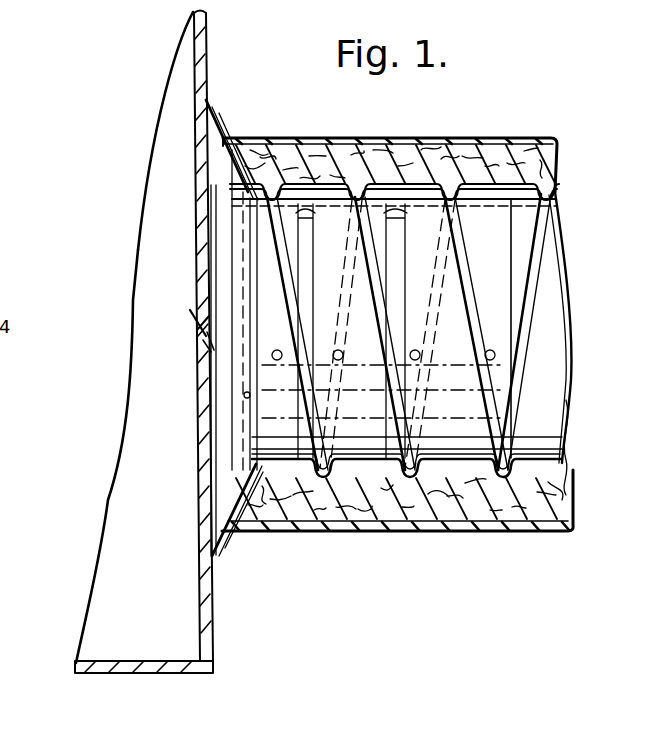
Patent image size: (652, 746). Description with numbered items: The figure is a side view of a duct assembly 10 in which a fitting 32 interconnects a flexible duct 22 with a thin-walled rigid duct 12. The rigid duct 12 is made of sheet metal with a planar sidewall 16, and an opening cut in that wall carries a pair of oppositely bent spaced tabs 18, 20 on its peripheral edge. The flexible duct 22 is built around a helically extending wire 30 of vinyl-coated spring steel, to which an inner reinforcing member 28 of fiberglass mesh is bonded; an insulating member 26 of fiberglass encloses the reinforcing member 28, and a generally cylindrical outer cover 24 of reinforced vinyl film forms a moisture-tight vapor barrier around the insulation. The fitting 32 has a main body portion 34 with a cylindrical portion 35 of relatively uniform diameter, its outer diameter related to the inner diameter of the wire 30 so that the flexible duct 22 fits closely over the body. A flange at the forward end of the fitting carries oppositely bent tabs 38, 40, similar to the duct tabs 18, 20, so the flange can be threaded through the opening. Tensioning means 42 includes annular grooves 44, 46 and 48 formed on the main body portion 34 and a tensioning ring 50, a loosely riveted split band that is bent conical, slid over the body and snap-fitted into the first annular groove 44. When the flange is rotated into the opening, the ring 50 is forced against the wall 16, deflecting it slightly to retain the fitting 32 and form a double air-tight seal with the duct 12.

The duct assembly 10 is at (143, 73).
The rigid duct 12 is at (92, 630).
The sidewall 16 is at (207, 61).
The tab 18 is at (192, 314).
The tab 20 is at (214, 356).
The flexible duct 22 is at (471, 130).
The outer cover 24 is at (522, 137).
The insulating member 26 is at (558, 170).
The reinforcing member 28 is at (540, 466).
The helical wire 30 is at (548, 213).
The fitting 32 is at (530, 429).
The main body portion 34 is at (348, 205).
The cylindrical portion 35 is at (500, 262).
The flange tab 38 is at (186, 328).
The flange tab 40 is at (200, 320).
The tensioning means 42 is at (231, 151).
The first annular groove 44 is at (256, 470).
The annular groove 46 is at (306, 196).
The annular groove 48 is at (404, 195).
The tensioning ring 50 is at (225, 562).